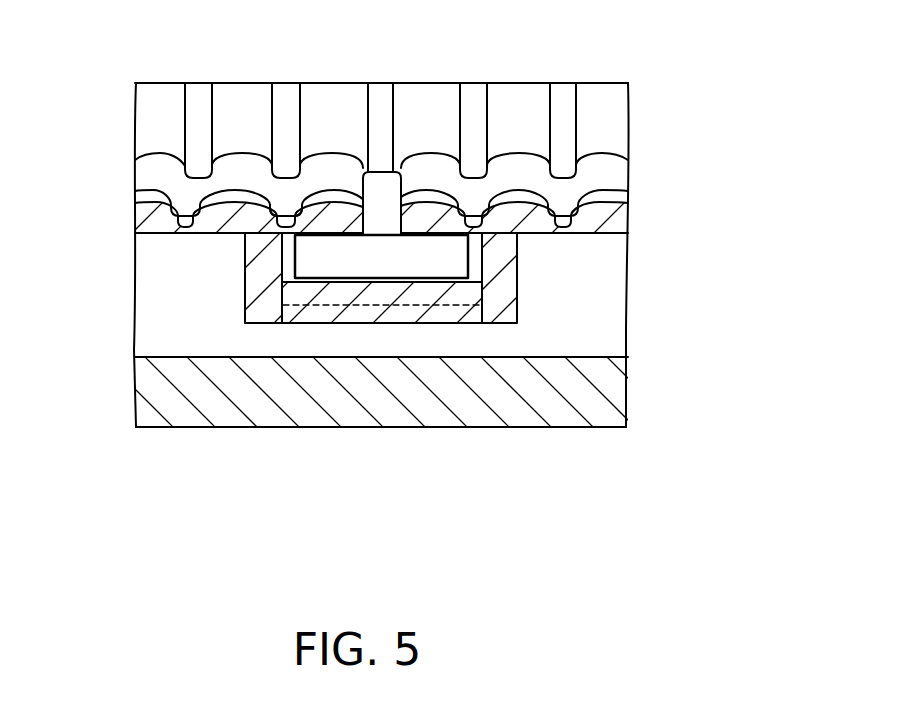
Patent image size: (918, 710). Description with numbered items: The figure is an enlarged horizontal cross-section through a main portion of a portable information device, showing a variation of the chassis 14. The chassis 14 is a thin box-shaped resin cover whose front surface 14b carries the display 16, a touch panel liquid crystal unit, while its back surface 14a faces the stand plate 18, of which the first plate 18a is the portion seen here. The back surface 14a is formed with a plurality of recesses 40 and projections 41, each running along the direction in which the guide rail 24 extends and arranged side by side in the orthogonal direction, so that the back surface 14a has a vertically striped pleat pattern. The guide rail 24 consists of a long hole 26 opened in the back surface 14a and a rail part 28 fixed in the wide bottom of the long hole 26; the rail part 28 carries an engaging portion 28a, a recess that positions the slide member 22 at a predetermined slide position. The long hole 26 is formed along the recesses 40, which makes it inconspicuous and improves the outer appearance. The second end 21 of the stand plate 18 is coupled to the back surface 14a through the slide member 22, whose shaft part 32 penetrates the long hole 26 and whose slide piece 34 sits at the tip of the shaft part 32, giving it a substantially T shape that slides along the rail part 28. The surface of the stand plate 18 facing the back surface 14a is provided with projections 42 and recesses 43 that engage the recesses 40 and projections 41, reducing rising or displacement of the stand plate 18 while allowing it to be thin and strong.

The chassis 14 is at (636, 217).
The back surface 14a is at (77, 152).
The front surface 14b is at (228, 428).
The display 16 is at (173, 417).
The stand plate 18 is at (195, 78).
The first plate 18a is at (234, 97).
The second end 21 is at (564, 182).
The slide member 22 is at (381, 139).
The guide rail 24 is at (418, 350).
The long hole 26 is at (380, 188).
The rail part 28 is at (334, 298).
The engaging portion 28a is at (446, 292).
The shaft part 32 is at (375, 178).
The slide piece 34 is at (432, 260).
The recesses 40 is at (140, 207).
The projections 41 is at (140, 177).
The projections 42 is at (310, 203).
The recesses 43 is at (268, 200).